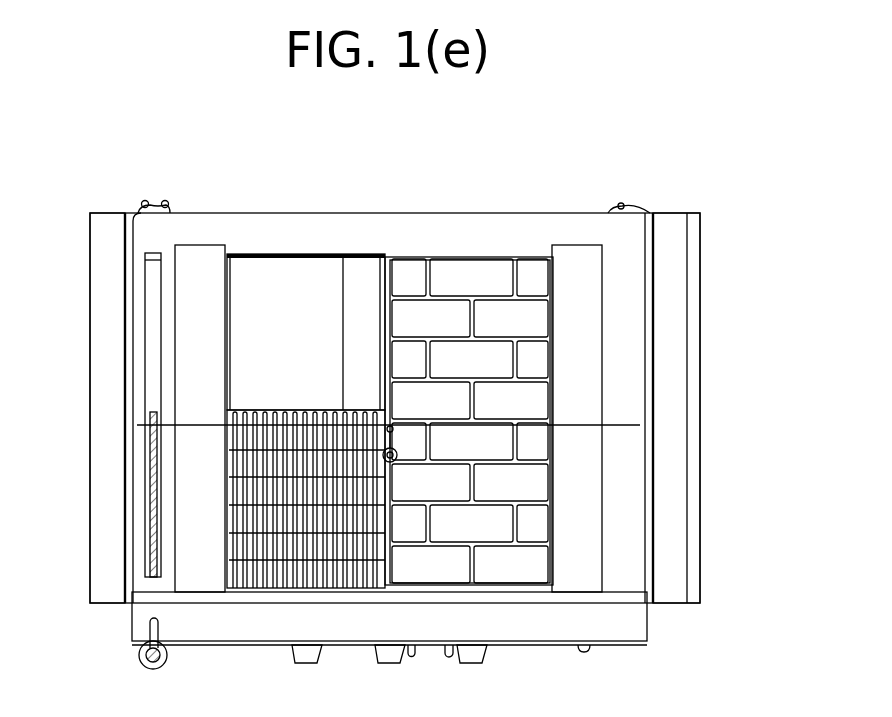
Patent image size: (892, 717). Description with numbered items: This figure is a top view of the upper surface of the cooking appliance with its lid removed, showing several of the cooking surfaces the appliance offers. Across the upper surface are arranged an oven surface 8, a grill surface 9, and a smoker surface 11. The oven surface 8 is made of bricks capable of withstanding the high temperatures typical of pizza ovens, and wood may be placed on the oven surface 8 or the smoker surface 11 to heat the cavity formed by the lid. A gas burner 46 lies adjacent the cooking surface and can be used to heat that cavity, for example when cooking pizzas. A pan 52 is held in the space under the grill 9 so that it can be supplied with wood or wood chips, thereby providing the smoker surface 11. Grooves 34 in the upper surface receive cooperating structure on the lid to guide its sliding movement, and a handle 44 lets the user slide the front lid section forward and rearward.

The oven surface 8 is at (464, 275).
The grill surface 9 is at (240, 538).
The smoker surface 11 is at (278, 240).
The grooves 34 is at (131, 303).
The handle 44 is at (140, 656).
The gas burner 46 is at (147, 500).
The pan 52 is at (290, 347).